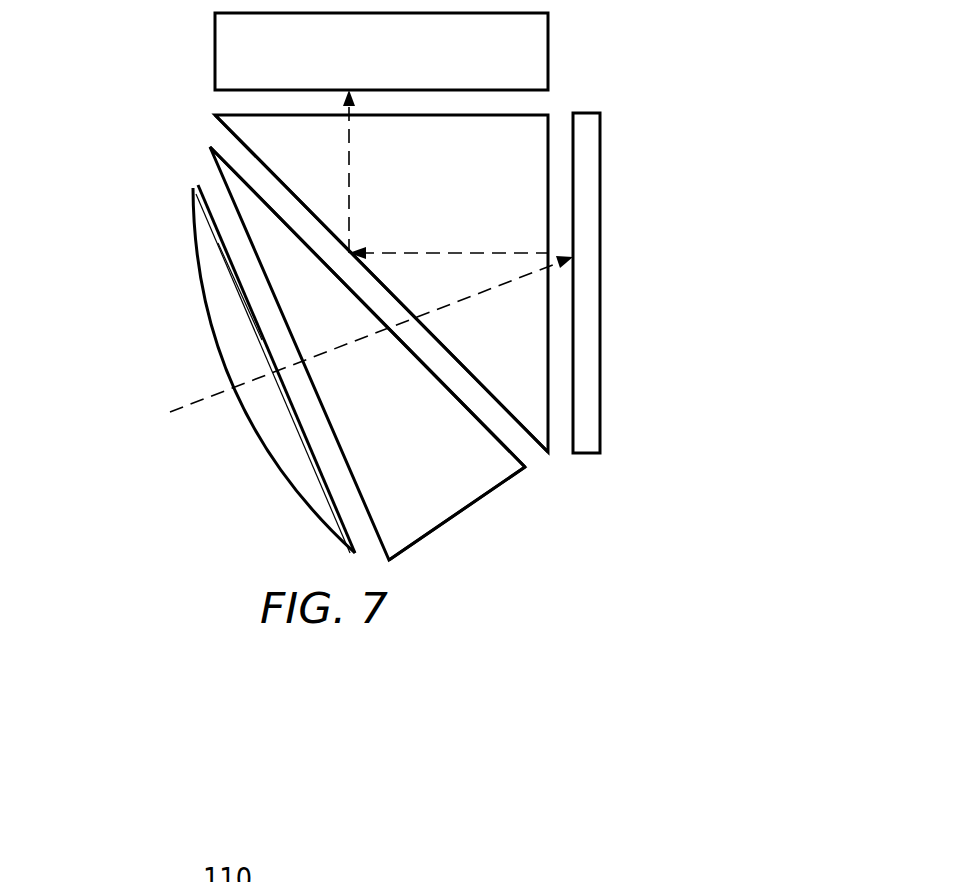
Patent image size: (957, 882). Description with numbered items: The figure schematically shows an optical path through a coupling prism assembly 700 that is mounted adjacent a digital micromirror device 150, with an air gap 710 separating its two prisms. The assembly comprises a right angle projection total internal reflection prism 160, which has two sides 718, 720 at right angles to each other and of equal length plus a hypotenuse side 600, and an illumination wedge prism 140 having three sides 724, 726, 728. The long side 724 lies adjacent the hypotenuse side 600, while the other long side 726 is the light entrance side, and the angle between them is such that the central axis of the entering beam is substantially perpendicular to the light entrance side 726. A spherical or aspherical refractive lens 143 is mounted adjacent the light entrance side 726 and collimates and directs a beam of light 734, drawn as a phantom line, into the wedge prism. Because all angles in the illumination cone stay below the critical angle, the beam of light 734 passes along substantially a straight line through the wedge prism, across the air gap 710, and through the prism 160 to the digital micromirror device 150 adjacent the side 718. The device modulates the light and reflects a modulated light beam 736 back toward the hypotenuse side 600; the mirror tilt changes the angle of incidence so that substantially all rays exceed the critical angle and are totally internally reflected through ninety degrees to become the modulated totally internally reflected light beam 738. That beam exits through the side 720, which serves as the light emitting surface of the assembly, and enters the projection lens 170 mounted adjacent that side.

The coupling prism assembly 700 is at (128, 54).
The projection lens 170 is at (556, 44).
The side 720 is at (459, 114).
The projection total internal reflection (TIR) prism 160 is at (525, 355).
The hypotenuse side 600 is at (291, 186).
The illumination wedge prism 140 is at (436, 511).
The light entrance side 726 is at (222, 182).
The side 724 is at (491, 425).
The side 728 is at (420, 543).
The air gap 710 is at (542, 469).
The digital micromirror device (DMD) 150 is at (609, 321).
The side 718 is at (548, 150).
The modulated totally internally reflected light beam 738 is at (349, 152).
The modulated light beam 736 is at (496, 252).
The beam of light 734 is at (330, 350).
The spherical or aspherical refractive lens 143 is at (274, 477).